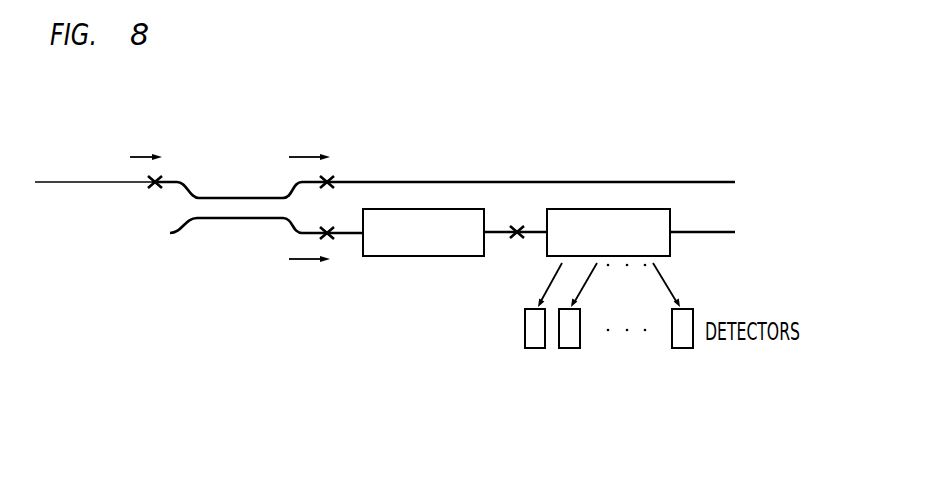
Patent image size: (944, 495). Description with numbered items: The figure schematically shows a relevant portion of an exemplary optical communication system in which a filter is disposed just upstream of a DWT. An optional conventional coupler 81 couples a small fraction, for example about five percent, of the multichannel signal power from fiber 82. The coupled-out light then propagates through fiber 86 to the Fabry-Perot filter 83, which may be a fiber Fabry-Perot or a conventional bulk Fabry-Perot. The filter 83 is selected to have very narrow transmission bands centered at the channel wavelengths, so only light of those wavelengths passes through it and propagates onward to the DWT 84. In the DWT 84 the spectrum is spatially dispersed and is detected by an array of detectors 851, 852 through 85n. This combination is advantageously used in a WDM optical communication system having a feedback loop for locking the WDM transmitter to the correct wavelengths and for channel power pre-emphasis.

The coupler 81 is at (230, 220).
The fiber 82 is at (72, 185).
The Fabry-Perot filter 83 is at (458, 209).
The DWT 84 is at (648, 209).
The fiber 86 is at (348, 234).
The detector 851 is at (525, 317).
The detector 852 is at (565, 348).
The detector 85n is at (678, 349).